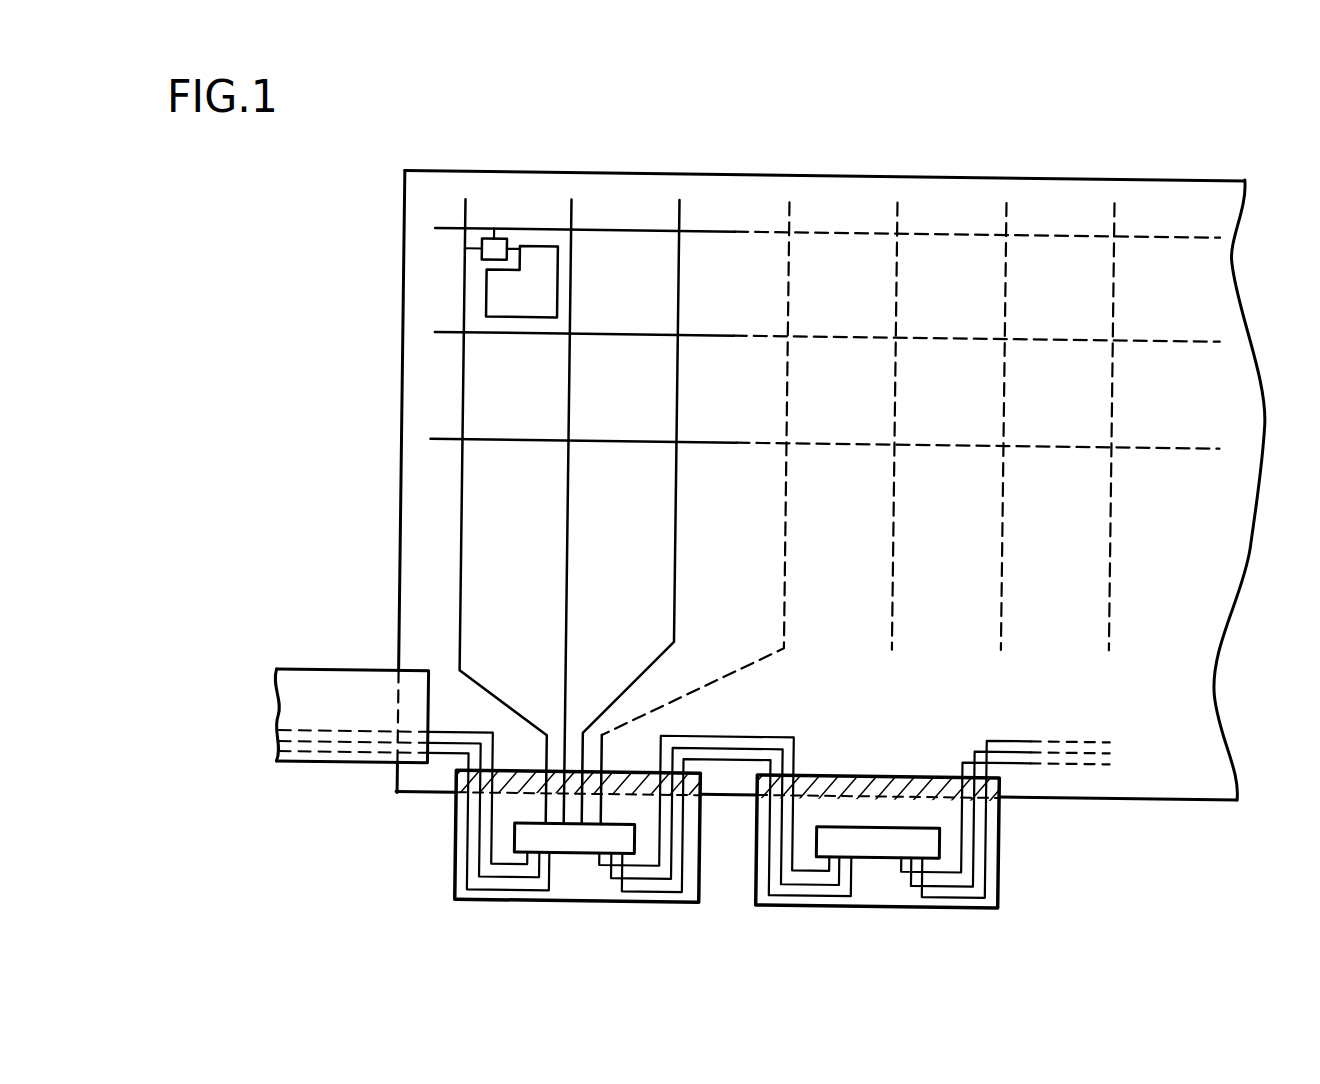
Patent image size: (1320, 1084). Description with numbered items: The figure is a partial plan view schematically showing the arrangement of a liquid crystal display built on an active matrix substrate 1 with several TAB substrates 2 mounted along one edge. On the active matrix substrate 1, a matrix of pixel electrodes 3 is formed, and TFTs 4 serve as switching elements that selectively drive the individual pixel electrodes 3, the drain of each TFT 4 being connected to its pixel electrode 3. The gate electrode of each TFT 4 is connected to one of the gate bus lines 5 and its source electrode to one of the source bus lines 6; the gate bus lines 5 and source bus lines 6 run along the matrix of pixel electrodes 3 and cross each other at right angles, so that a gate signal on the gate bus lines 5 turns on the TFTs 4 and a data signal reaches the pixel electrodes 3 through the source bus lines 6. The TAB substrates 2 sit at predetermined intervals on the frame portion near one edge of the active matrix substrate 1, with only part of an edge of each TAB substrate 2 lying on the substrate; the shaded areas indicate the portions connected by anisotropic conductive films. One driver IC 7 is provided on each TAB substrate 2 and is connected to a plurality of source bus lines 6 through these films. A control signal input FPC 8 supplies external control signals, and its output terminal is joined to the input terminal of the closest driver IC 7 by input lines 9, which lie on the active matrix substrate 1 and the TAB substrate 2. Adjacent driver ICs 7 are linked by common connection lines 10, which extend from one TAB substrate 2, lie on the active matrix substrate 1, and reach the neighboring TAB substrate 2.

The active matrix substrate 1 is at (1252, 550).
The TAB substrate 2 is at (453, 893).
The pixel electrode 3 is at (490, 292).
The TFT 4 is at (474, 249).
The gate bus line 5 is at (438, 232).
The source bus line 6 is at (458, 216).
The driver IC 7 is at (581, 845).
The control signal input FPC 8 is at (321, 690).
The input line 9 is at (470, 734).
The common connection line 10 is at (730, 762).